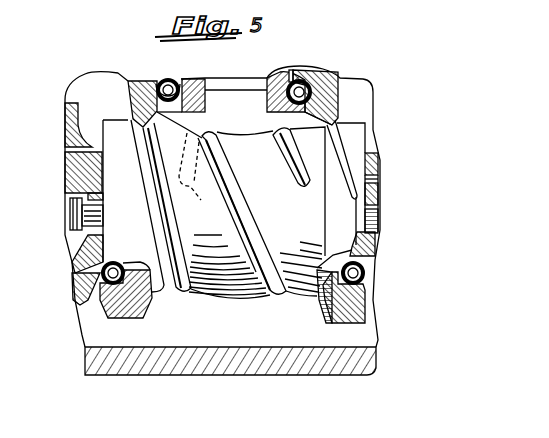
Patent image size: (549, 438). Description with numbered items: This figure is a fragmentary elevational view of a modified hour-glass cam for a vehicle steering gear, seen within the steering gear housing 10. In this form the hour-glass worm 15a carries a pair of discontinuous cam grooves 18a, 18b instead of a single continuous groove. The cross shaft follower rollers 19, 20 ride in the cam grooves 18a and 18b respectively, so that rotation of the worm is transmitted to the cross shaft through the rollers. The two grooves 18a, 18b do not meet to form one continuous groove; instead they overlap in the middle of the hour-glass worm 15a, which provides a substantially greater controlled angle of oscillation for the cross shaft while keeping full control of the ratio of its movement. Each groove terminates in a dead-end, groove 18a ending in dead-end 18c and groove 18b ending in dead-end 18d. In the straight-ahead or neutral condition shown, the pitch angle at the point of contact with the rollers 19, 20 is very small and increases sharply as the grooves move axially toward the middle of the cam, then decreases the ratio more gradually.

The steering gear housing 10 is at (358, 363).
The hour-glass worm 15a is at (216, 297).
The cam groove 18a is at (177, 226).
The cam groove 18b is at (255, 218).
The dead-end 18c is at (293, 181).
The dead-end 18d is at (201, 174).
The cross shaft follower roller 19 is at (135, 78).
The cross shaft follower roller 20 is at (322, 78).